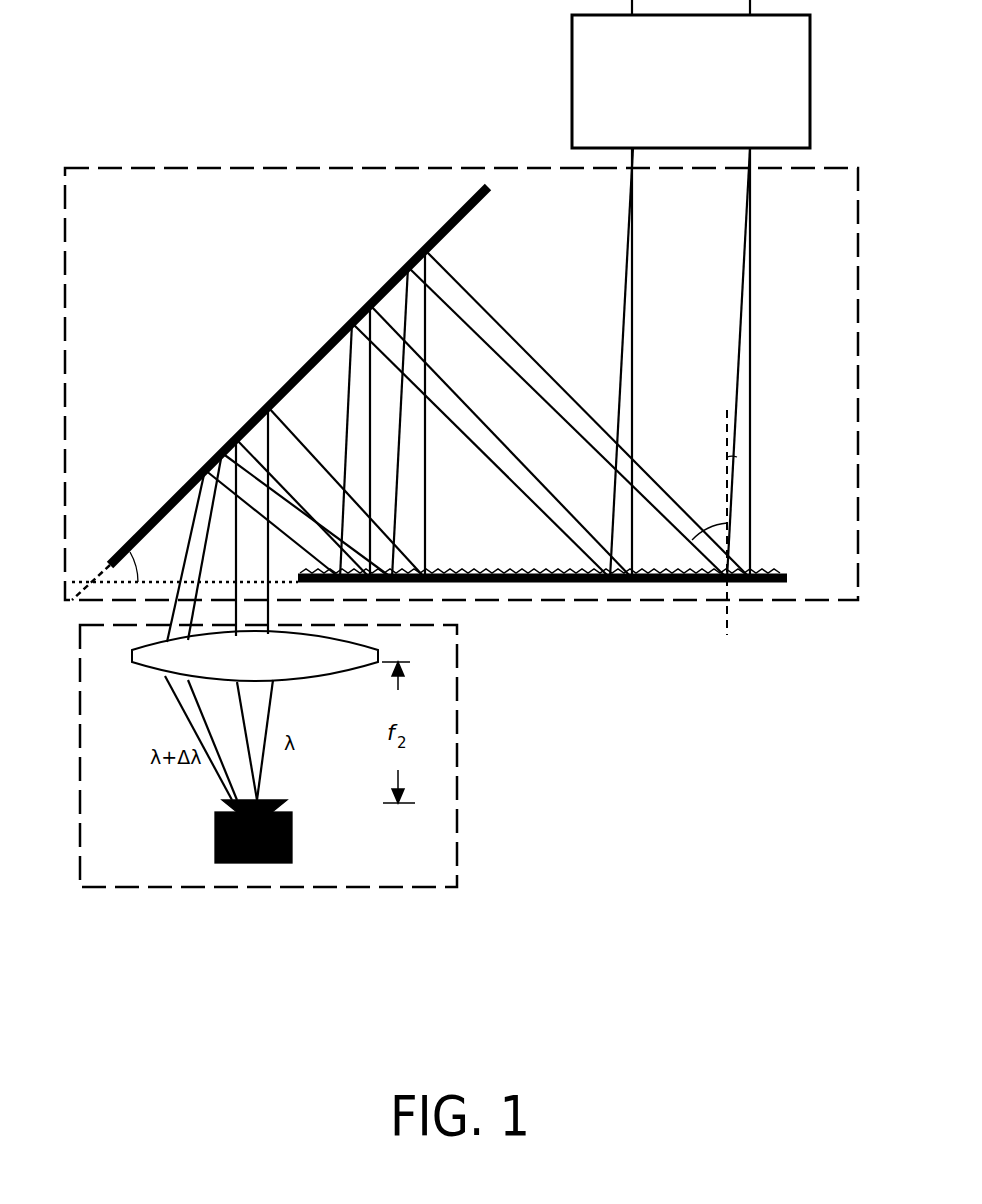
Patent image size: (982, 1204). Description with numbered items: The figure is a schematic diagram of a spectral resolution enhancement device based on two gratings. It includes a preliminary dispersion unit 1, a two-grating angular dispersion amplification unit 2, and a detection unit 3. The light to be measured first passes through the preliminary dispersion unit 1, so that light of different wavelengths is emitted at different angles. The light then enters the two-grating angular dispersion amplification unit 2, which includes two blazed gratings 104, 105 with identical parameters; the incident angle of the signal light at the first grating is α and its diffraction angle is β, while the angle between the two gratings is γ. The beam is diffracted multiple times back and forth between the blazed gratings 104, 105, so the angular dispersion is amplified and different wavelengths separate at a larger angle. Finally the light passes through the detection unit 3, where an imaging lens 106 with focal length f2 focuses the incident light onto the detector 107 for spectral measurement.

The preliminary dispersion unit 1 is at (572, 58).
The two-grating angular dispersion amplification unit 2 is at (208, 168).
The detection unit 3 is at (382, 888).
The blazed grating 104 is at (307, 362).
The blazed grating 105 is at (763, 583).
The imaging lens 106 is at (373, 647).
The detector 107 is at (252, 862).